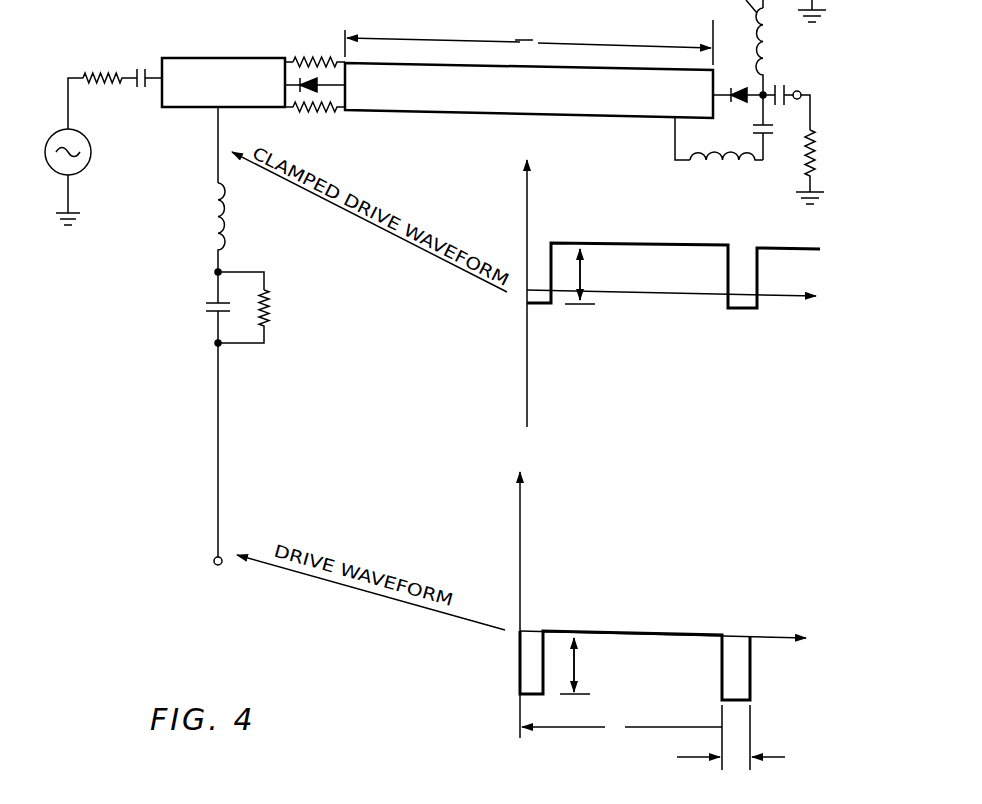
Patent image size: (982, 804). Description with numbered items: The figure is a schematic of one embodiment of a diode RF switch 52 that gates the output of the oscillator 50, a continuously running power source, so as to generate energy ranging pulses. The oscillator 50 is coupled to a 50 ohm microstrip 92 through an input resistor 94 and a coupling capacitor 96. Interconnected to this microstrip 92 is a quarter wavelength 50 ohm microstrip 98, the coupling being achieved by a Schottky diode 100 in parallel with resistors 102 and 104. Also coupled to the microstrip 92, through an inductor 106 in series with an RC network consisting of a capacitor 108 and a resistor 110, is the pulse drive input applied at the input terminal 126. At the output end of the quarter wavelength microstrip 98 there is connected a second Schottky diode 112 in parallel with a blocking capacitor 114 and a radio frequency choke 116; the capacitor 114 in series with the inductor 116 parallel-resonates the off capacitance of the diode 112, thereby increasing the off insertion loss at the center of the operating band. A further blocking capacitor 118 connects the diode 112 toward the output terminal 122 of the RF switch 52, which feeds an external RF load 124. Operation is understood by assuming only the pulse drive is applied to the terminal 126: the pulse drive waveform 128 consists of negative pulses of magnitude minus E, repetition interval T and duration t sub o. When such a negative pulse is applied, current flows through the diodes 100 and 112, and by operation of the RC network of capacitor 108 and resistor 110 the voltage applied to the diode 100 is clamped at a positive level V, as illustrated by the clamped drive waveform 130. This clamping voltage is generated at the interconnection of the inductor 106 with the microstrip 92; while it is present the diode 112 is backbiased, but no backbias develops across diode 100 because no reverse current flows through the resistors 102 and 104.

The oscillator 50 is at (91, 151).
The RF switch 52 is at (158, 214).
The input resistor 94 is at (98, 73).
The coupling capacitor 96 is at (141, 68).
The 50 ohm microstrip 92 is at (230, 58).
The resistor 102 is at (310, 55).
The Schottky diode 100 is at (322, 82).
The resistor 104 is at (316, 112).
The quarter wavelength 50 ohm microstrip 98 is at (563, 116).
The inductor 106 is at (228, 231).
The capacitor 108 is at (206, 306).
The resistor 110 is at (270, 313).
The Schottky diode 112 is at (742, 88).
The blocking capacitor 114 is at (752, 131).
The radio frequency choke 116 is at (710, 163).
The blocking capacitor 118 is at (780, 80).
The output terminal 122 is at (798, 90).
The external RF load 124 is at (805, 152).
The input terminal 126 is at (213, 561).
The pulse drive waveform 128 is at (641, 625).
The clamped drive waveform 130 is at (649, 303).